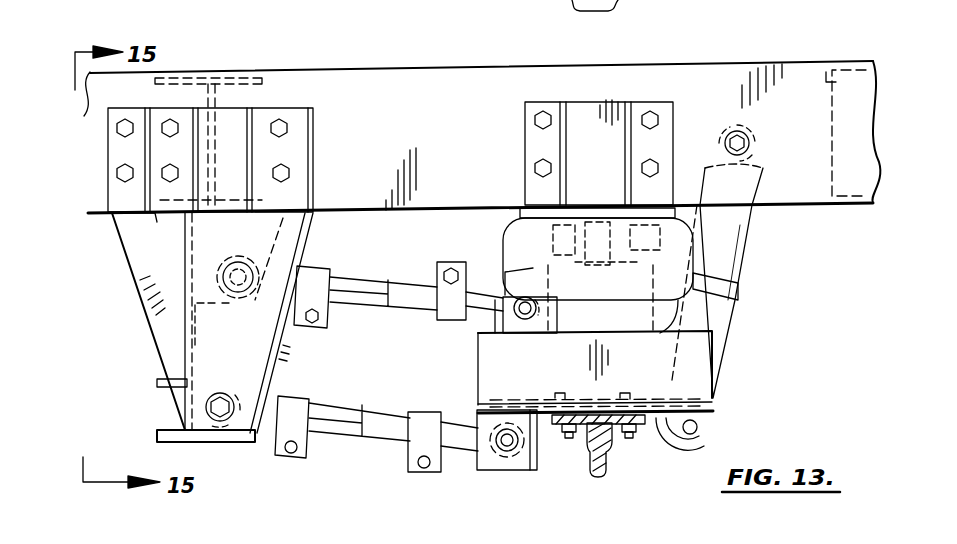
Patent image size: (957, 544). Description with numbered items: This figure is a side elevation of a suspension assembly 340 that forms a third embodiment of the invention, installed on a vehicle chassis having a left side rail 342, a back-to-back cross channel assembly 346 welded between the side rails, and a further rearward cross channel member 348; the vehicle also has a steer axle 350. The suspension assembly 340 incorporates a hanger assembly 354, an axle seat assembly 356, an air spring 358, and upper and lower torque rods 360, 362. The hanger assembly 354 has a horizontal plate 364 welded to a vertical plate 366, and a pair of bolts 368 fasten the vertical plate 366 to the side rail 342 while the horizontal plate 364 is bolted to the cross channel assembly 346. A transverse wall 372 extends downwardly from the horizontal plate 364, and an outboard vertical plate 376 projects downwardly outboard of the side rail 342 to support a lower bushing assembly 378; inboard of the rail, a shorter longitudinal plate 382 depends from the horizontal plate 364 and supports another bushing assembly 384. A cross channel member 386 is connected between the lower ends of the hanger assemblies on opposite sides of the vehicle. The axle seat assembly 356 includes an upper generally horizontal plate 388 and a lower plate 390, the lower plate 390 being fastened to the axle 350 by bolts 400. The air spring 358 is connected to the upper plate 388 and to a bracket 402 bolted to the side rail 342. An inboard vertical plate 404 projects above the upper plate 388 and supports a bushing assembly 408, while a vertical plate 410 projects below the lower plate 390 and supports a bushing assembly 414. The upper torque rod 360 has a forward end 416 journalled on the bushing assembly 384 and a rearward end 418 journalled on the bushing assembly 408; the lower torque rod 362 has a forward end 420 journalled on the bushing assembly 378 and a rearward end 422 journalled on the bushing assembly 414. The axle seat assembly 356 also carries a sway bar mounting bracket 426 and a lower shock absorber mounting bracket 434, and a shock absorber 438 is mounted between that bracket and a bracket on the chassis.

The suspension assembly 340 is at (367, 473).
The left side rail 342 is at (455, 72).
The back-to-back cross channel assembly 346 is at (225, 80).
The cross channel member 348 is at (818, 78).
The steer axle 350 is at (597, 472).
The hanger assembly 354 is at (135, 292).
The axle seat assembly 356 is at (728, 411).
The air spring 358 is at (682, 270).
The upper torque rod 360 is at (369, 297).
The lower torque rod 362 is at (354, 416).
The horizontal plate 364 is at (135, 218).
The vertical plate 366 is at (292, 108).
The bolts 368 is at (286, 175).
The transverse wall 372 is at (182, 324).
The outboard vertical plate 376 is at (265, 366).
The lower bushing assembly 378 is at (222, 414).
The longitudinal plate 382 is at (277, 243).
The bushing assembly 384 is at (228, 308).
The cross channel member 386 is at (160, 381).
The upper plate 388 is at (698, 346).
The lower plate 390 is at (658, 430).
The bolts 400 is at (625, 436).
The bracket 402 is at (665, 118).
The inboard vertical plate 404 is at (512, 300).
The bushing assembly 408 is at (525, 318).
The vertical plate 410 is at (515, 470).
The bushing assembly 414 is at (505, 448).
The forward end 416 is at (250, 262).
The rearward end 418 is at (494, 330).
The forward end 420 is at (234, 398).
The rearward end 422 is at (492, 452).
The sway bar mounting bracket 426 is at (582, 222).
The lower shock absorber mounting bracket 434 is at (698, 428).
The shock absorber 438 is at (736, 324).